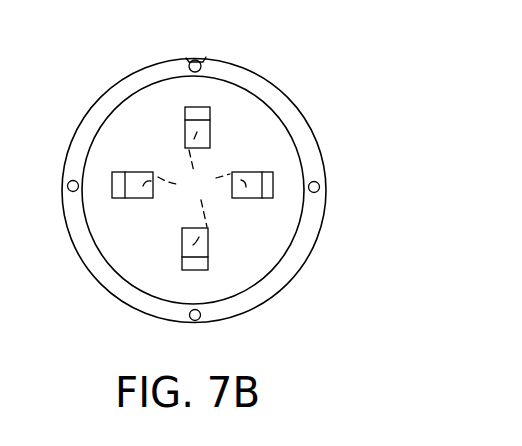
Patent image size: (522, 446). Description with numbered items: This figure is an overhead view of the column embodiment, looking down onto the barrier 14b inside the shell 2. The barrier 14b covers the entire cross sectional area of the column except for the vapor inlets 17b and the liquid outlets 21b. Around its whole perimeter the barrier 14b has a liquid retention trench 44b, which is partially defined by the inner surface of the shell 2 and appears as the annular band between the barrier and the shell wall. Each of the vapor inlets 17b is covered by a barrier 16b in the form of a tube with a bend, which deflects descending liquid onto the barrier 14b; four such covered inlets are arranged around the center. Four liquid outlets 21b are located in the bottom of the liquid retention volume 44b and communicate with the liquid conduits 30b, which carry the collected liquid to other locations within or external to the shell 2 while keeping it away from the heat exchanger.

The shell 2 is at (318, 237).
The barrier 14b is at (159, 246).
The barrier 16b is at (207, 107).
The vapor inlets 17b is at (194, 188).
The liquid outlets 21b is at (204, 60).
The liquid conduits 30b is at (185, 59).
The liquid retention trench 44b is at (260, 293).